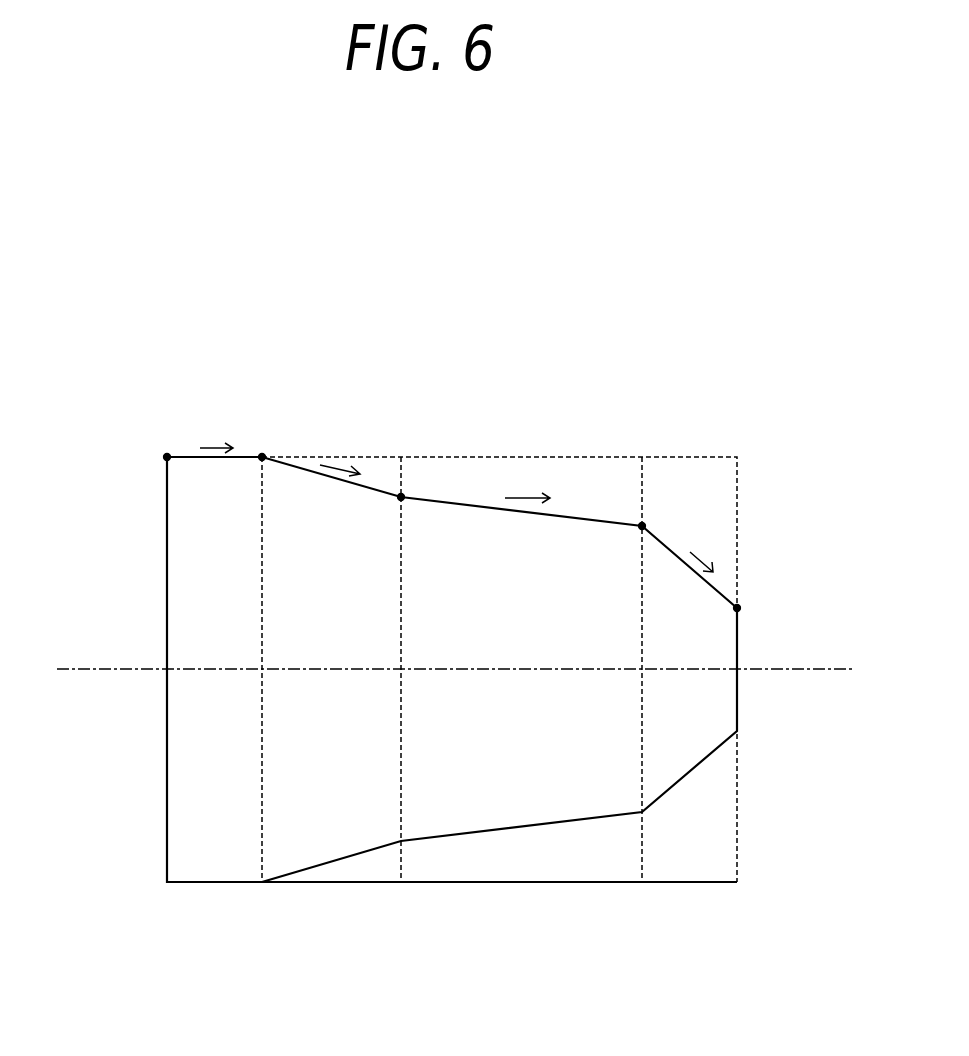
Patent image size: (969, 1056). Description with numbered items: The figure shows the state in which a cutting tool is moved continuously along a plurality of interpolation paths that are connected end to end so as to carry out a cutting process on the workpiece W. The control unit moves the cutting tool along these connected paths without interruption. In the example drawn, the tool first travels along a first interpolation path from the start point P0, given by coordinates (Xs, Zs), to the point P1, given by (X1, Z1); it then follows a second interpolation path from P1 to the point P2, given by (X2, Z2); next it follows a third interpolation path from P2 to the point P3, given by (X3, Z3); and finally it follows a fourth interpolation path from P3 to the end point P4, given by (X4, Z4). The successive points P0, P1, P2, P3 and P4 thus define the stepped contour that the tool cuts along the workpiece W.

The workpiece W is at (188, 567).
The start point of first interpolation path P0 is at (96, 458).
The end point of first interpolation path P1 is at (278, 435).
The end point of second interpolation path P2 is at (335, 514).
The end point of third interpolation path P3 is at (575, 545).
The end point of fourth interpolation path P4 is at (806, 612).